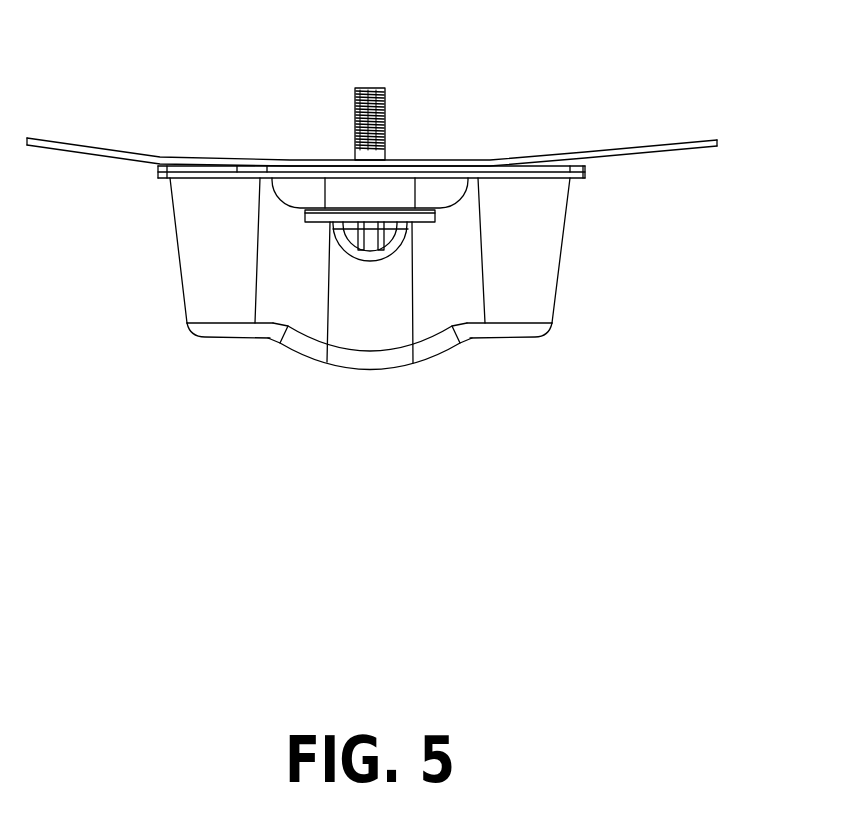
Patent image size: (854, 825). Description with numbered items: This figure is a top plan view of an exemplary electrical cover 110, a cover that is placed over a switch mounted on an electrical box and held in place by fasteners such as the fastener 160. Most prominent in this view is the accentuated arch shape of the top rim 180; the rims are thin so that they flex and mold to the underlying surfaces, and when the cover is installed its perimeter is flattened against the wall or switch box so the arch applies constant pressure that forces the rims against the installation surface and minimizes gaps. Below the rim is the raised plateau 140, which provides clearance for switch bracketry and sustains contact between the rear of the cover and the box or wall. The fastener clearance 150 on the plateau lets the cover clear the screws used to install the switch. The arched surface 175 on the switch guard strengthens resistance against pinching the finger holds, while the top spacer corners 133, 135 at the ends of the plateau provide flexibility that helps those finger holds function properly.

The electrical cover 110 is at (607, 681).
The top spacer corner 133 is at (160, 178).
The top spacer corner 135 is at (572, 178).
The raised plateau 140 is at (185, 168).
The fastener clearance 150 is at (440, 187).
The fastener 160 is at (362, 103).
The arched surface 175 is at (366, 368).
The top rim 180 is at (650, 140).